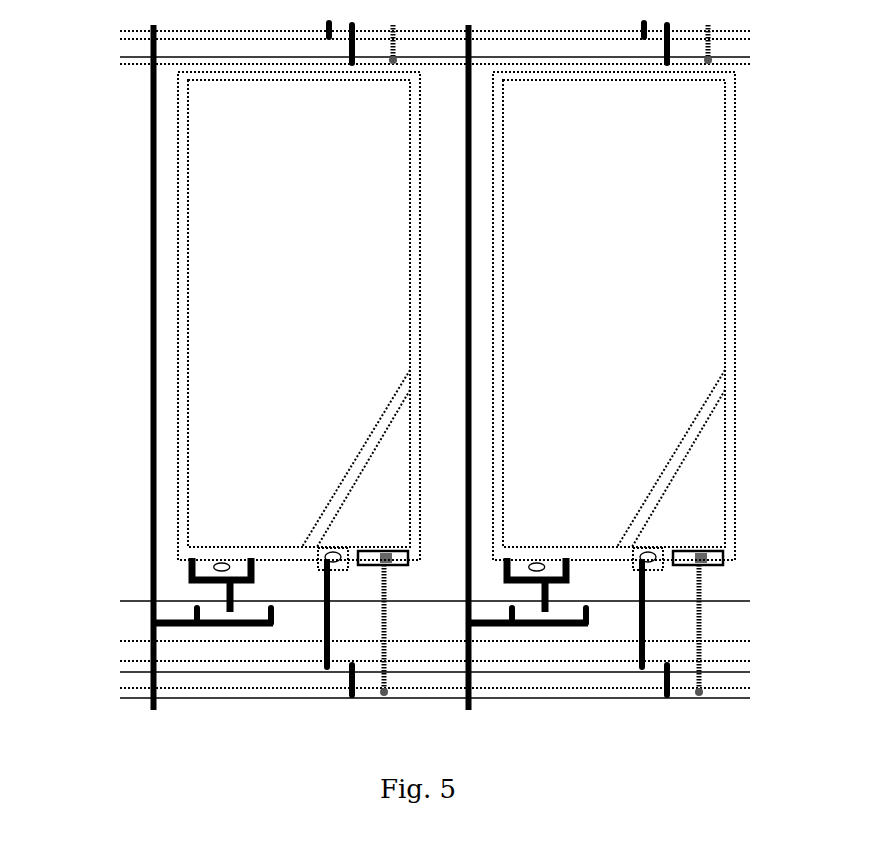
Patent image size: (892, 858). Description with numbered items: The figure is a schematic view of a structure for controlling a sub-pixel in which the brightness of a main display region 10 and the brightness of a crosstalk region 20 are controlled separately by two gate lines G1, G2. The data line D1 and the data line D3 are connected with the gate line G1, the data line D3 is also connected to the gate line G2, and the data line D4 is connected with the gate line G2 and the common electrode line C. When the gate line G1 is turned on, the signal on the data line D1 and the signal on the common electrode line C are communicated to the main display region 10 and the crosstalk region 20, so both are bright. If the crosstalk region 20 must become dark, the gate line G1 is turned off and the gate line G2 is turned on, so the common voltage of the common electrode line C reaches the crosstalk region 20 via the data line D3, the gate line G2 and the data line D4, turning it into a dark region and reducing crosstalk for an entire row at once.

The main display region 10 is at (228, 213).
The crosstalk region 20 is at (373, 495).
The data line D1 is at (150, 273).
The data line D3 is at (322, 610).
The data line D4 is at (346, 688).
The gate line G1 is at (130, 630).
The gate line G2 is at (130, 668).
The common electrode line C is at (132, 692).